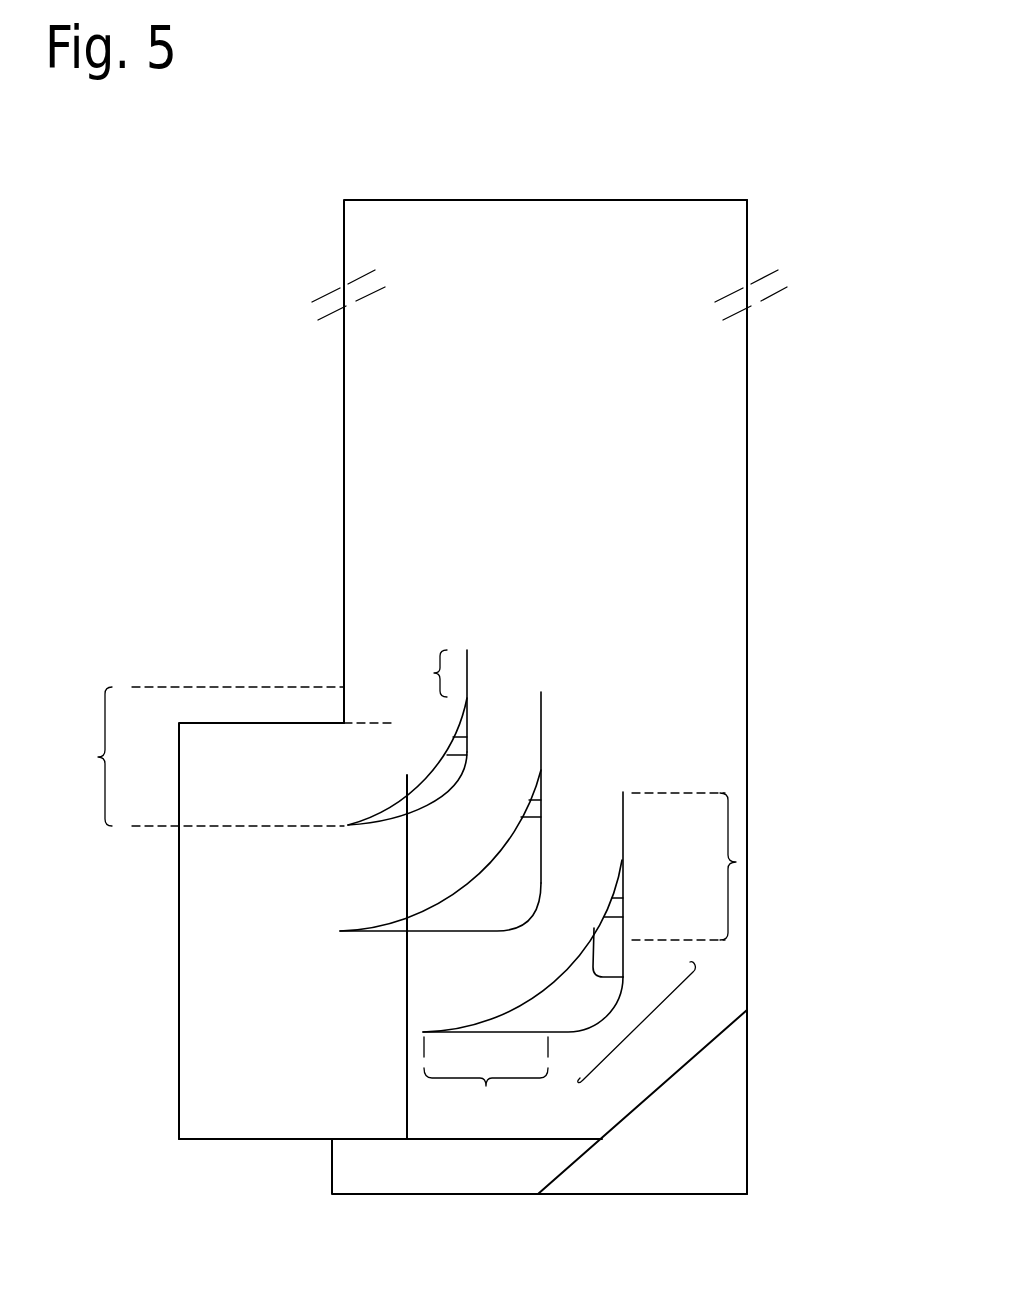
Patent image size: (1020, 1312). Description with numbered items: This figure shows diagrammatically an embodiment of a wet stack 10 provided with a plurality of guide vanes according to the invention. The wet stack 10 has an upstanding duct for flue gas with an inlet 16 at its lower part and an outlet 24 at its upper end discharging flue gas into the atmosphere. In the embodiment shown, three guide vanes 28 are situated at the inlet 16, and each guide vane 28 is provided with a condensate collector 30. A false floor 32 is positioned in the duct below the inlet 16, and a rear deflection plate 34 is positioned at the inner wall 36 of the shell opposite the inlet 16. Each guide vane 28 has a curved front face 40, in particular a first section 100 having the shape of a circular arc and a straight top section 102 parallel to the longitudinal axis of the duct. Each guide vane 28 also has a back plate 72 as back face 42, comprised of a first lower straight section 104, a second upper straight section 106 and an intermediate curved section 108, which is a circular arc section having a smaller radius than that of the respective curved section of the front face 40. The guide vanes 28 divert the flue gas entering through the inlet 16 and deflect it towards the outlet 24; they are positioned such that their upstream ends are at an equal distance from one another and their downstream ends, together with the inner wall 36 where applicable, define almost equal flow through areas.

The wet stack 10 is at (270, 360).
The inlet 16 is at (262, 723).
The outlet 24 is at (663, 200).
The guide vane 28 is at (403, 815).
The condensate collector 30 is at (462, 746).
The false floor 32 is at (482, 1139).
The rear deflection plate 34 is at (653, 1092).
The inner wall 36 is at (748, 935).
The curved front face 40 is at (378, 812).
The back face 42 is at (420, 806).
The back plate 72 is at (578, 1023).
The first section 100 is at (196, 756).
The straight top section 102 is at (416, 673).
The first straight section 104 is at (486, 1077).
The second straight section 106 is at (715, 866).
The intermediate curved section 108 is at (638, 1033).